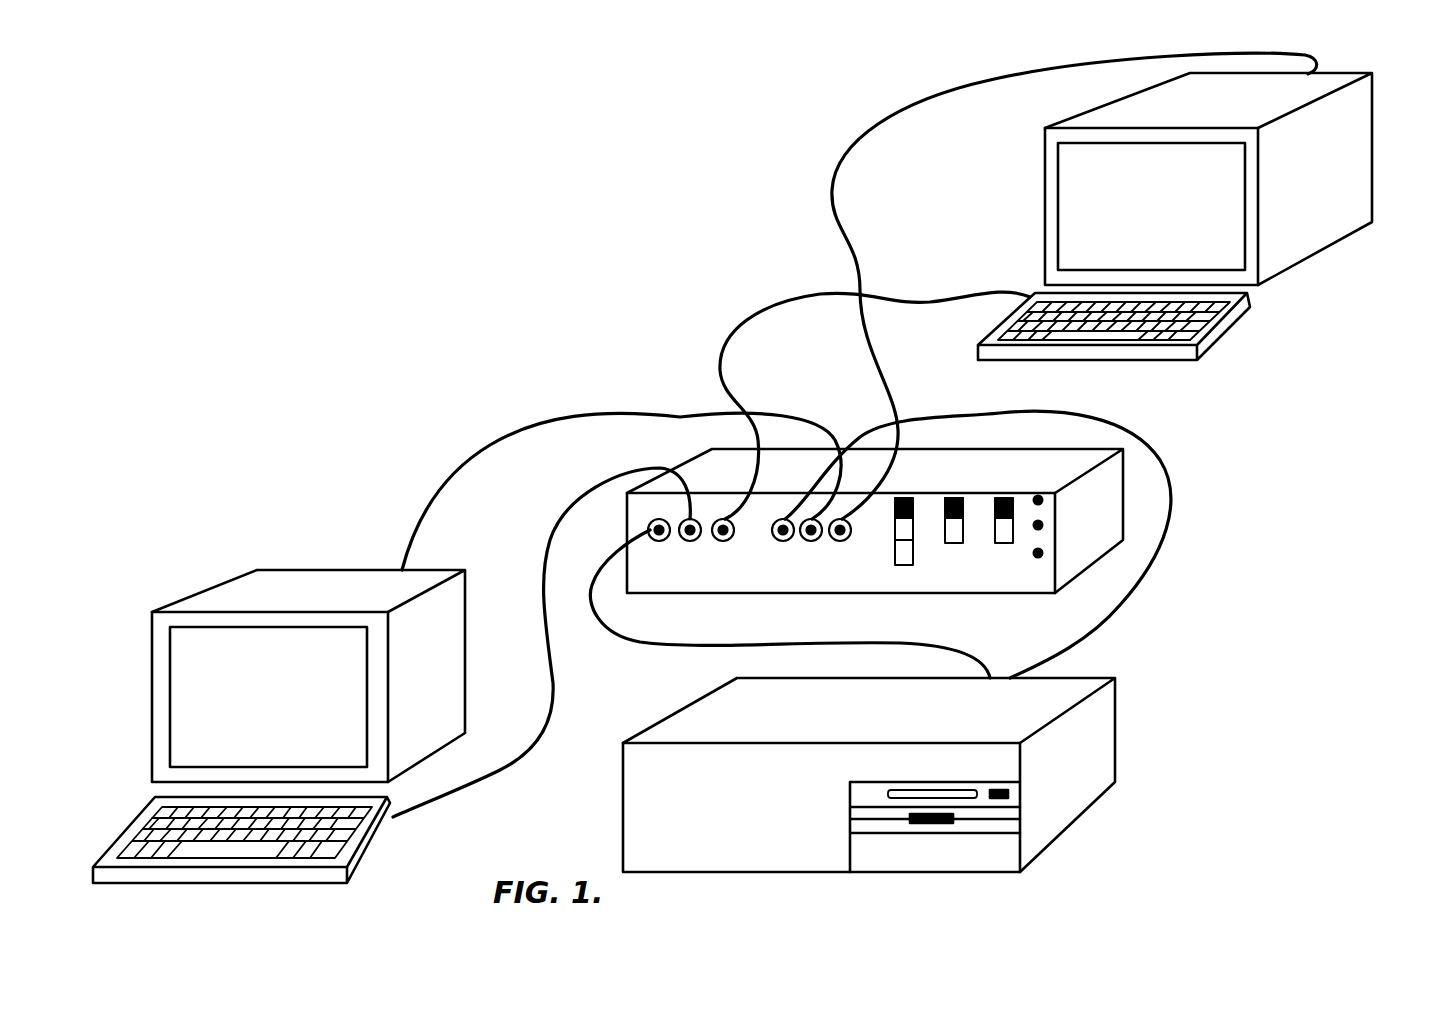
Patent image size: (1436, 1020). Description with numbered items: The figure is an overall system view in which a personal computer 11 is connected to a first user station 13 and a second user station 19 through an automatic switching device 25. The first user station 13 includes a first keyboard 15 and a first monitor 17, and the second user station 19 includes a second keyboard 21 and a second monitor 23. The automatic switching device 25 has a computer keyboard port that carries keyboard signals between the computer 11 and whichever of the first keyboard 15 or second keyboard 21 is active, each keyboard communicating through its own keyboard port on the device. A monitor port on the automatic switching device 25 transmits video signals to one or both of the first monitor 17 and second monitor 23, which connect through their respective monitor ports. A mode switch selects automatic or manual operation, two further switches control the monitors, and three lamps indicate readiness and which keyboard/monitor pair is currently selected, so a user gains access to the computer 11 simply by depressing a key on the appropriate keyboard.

The personal computer 11 is at (1115, 760).
The first user station 13 is at (140, 709).
The first keyboard 15 is at (373, 845).
The first monitor 17 is at (257, 570).
The second user station 19 is at (1331, 294).
The second keyboard 21 is at (1232, 330).
The second monitor 23 is at (1372, 150).
The automatic switching device 25 is at (1055, 577).